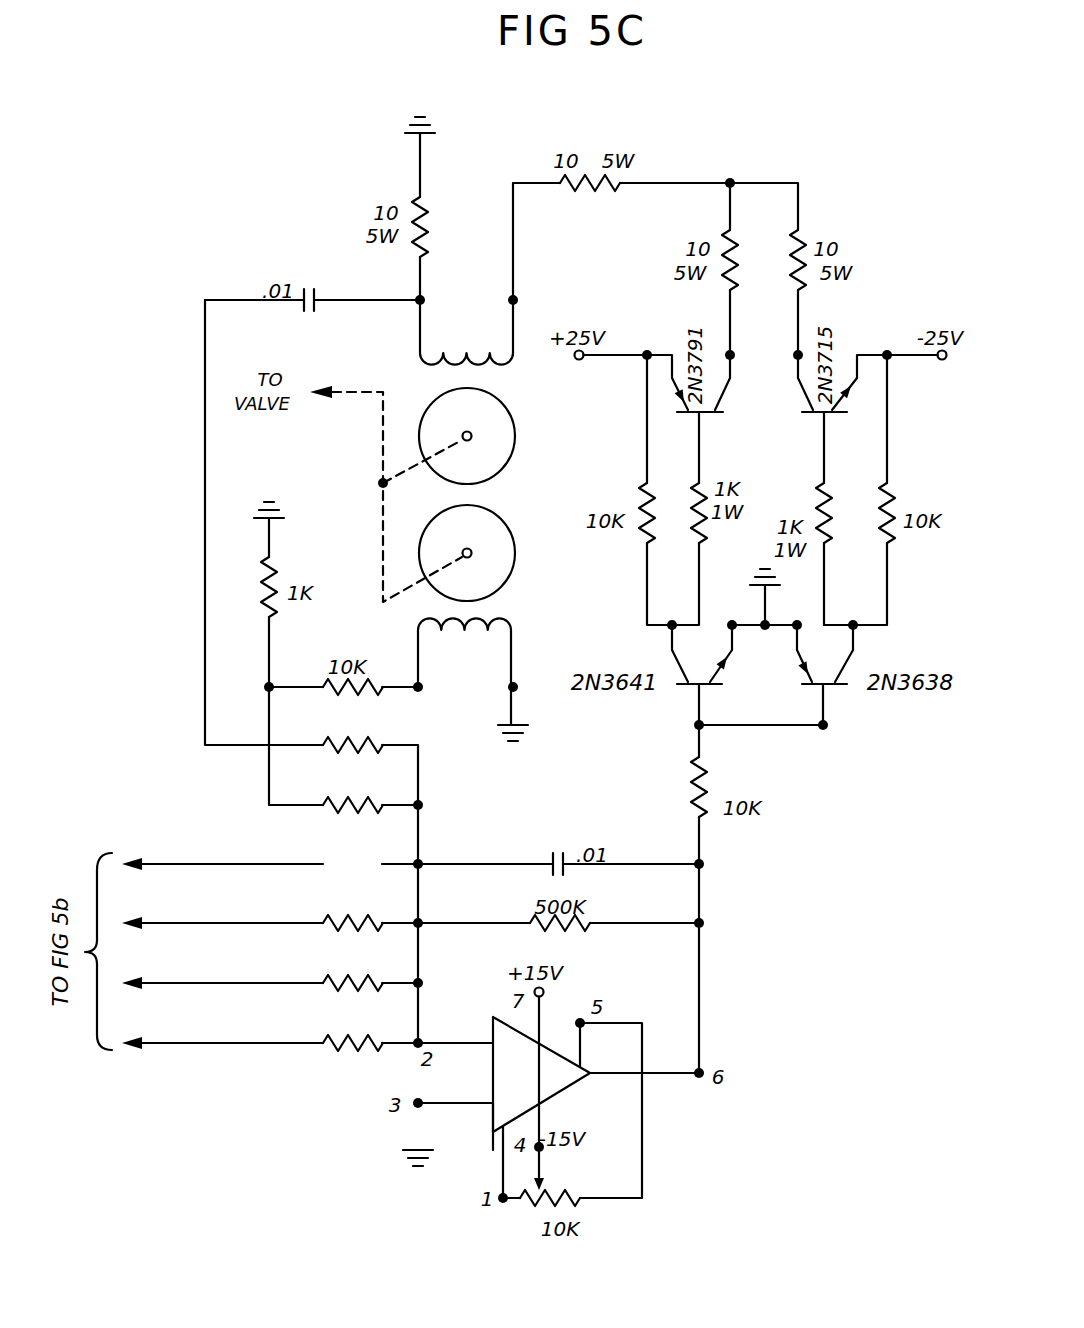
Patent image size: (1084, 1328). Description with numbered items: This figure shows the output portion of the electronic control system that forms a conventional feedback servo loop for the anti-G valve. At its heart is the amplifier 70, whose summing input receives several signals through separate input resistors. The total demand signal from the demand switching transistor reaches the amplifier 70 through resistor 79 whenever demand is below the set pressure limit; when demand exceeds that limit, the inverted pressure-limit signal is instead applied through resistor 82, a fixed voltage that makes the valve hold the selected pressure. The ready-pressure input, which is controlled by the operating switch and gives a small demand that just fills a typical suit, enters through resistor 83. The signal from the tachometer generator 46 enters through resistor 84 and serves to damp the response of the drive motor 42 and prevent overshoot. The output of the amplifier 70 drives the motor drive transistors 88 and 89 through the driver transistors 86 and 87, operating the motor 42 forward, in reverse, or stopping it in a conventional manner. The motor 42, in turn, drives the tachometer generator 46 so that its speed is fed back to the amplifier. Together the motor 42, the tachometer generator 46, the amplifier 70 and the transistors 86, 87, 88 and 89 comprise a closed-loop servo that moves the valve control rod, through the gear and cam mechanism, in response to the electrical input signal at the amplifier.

The motor 42 is at (515, 430).
The tachometer generator 46 is at (515, 565).
The amplifier 70 is at (555, 1095).
The resistor 79 is at (325, 1048).
The resistor 82 is at (325, 988).
The resistor 83 is at (325, 927).
The resistor 84 is at (325, 810).
The driver transistor 86 is at (345, 750).
The driver transistor 87 is at (685, 688).
The motor drive transistor 88 is at (835, 415).
The motor drive transistor 89 is at (715, 415).